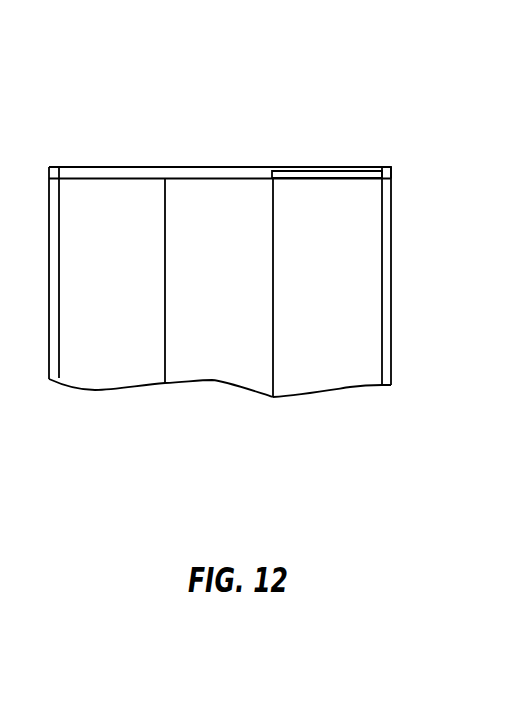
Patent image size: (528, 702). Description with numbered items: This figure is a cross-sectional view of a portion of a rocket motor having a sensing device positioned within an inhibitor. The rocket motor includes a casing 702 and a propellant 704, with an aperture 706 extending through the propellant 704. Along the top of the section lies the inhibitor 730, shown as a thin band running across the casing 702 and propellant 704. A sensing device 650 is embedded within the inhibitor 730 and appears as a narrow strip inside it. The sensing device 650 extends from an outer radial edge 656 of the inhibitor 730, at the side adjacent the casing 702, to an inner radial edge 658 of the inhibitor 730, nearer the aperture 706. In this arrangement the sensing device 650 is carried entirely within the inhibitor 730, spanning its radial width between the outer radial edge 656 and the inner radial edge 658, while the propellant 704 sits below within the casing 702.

The casing 702 is at (391, 274).
The propellant 704 is at (97, 348).
The aperture 706 is at (215, 355).
The inhibitor 730 is at (113, 175).
The sensing device 650 is at (368, 170).
The outer radial edge 656 is at (388, 165).
The inner radial edge 658 is at (273, 166).